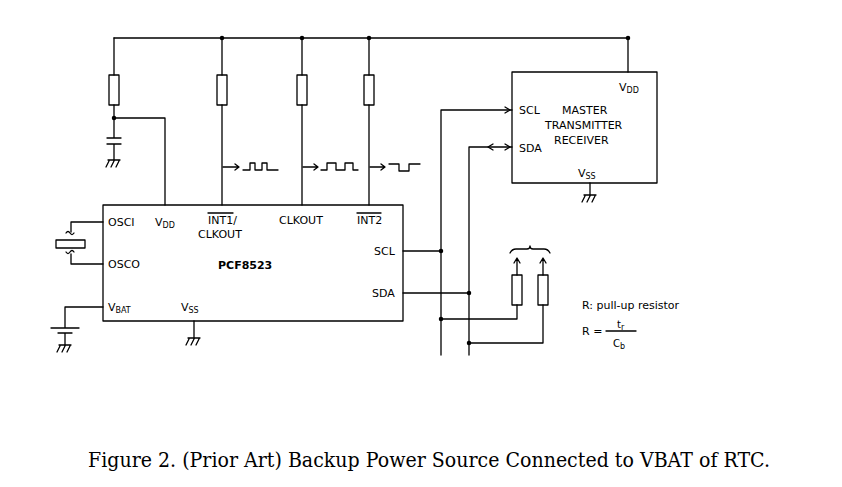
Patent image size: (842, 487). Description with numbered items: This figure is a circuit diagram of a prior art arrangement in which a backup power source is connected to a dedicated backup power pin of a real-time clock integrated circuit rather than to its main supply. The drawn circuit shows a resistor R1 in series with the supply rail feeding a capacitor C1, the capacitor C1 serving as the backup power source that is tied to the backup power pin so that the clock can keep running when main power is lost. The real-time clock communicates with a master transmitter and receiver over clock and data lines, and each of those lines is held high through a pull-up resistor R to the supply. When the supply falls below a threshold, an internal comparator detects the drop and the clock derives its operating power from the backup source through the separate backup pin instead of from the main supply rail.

The backup charging resistor R1 is at (127, 121).
The backup capacitor (backup power source) C1 is at (105, 142).
The pull-up resistor R is at (535, 268).